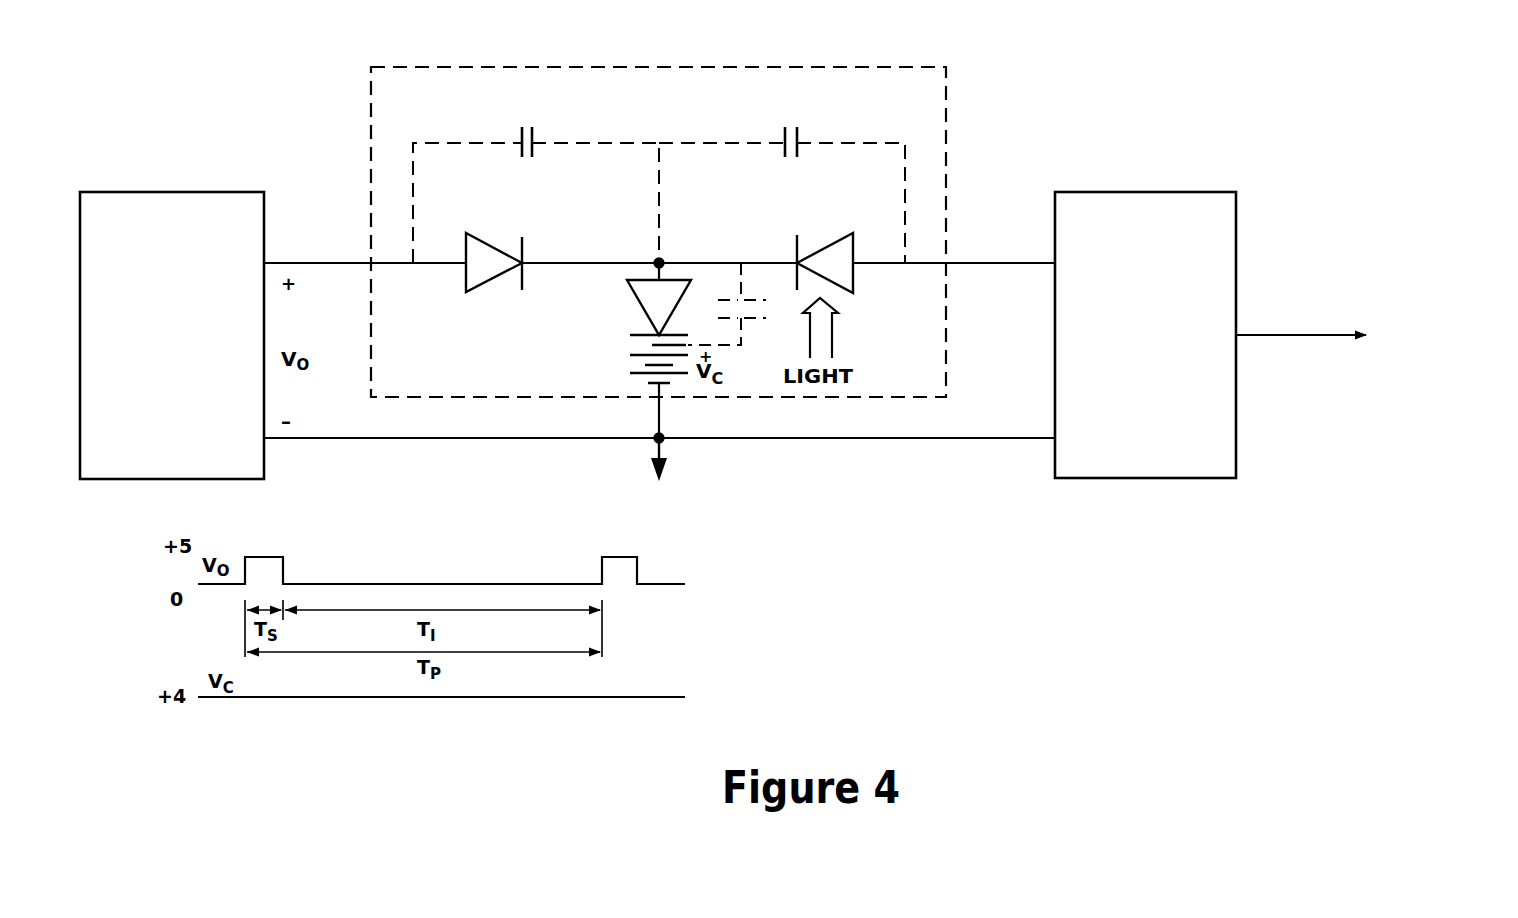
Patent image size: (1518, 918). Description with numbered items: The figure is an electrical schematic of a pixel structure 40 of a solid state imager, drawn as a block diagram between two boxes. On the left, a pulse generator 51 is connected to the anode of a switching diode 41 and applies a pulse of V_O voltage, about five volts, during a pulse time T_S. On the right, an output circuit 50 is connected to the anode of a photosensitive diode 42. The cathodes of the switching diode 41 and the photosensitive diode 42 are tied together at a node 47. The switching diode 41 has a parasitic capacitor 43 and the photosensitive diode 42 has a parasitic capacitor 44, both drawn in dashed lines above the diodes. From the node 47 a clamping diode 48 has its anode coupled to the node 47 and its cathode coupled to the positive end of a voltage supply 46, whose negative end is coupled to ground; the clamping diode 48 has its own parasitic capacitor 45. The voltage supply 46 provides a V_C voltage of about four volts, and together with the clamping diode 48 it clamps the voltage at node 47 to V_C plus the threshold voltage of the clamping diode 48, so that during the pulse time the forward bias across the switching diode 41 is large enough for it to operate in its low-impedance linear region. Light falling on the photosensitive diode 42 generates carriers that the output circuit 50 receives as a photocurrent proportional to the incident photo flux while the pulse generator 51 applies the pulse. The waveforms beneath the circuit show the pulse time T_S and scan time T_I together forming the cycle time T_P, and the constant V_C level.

The pixel structure 40 is at (772, 64).
The switching diode 41 is at (500, 284).
The photosensitive diode 42 is at (858, 281).
The parasitic capacitor 43 is at (531, 124).
The parasitic capacitor 44 is at (796, 124).
The parasitic capacitor 45 is at (768, 311).
The voltage supply 46 is at (624, 364).
The node 47 is at (667, 259).
The clamping diode 48 is at (630, 296).
The output circuit 50 is at (1196, 189).
The pulse generator 51 is at (210, 189).